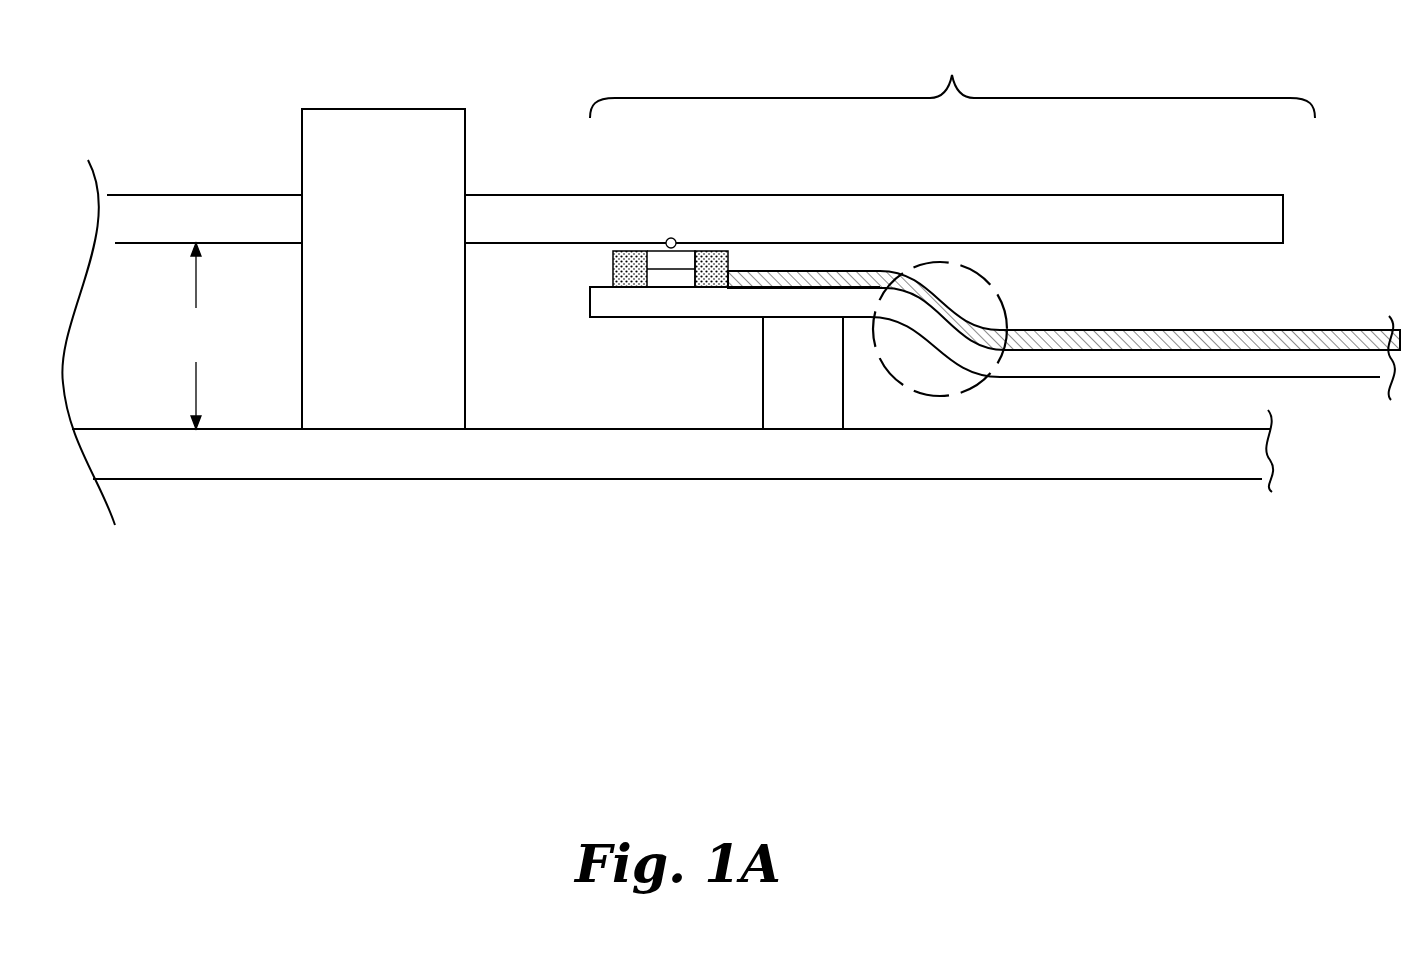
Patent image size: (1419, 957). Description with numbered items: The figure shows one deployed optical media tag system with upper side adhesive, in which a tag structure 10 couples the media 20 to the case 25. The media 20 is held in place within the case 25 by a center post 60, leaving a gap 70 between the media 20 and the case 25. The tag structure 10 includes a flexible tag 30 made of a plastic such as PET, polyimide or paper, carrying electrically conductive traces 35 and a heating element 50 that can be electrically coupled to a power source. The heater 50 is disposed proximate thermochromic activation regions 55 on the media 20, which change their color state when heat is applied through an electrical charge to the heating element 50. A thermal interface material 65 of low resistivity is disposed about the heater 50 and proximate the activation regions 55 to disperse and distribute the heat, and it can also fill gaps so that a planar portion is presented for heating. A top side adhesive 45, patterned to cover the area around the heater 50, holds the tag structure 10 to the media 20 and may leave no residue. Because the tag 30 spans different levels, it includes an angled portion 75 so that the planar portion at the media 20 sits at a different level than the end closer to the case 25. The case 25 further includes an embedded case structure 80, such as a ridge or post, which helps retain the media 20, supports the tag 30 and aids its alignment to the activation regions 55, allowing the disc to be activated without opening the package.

The tag structure 10 is at (952, 77).
The media 20 is at (182, 207).
The case 25 is at (567, 468).
The tag 30 is at (1298, 366).
The electrically conductive traces 35 is at (1220, 335).
The top side adhesive 45 is at (738, 252).
The heating element 50 is at (670, 273).
The activation regions 55 is at (676, 243).
The center post 60 is at (301, 139).
The thermal interface material 65 is at (655, 253).
The gap 70 is at (195, 336).
The angled portion 75 is at (986, 293).
The case structure 80 is at (762, 377).